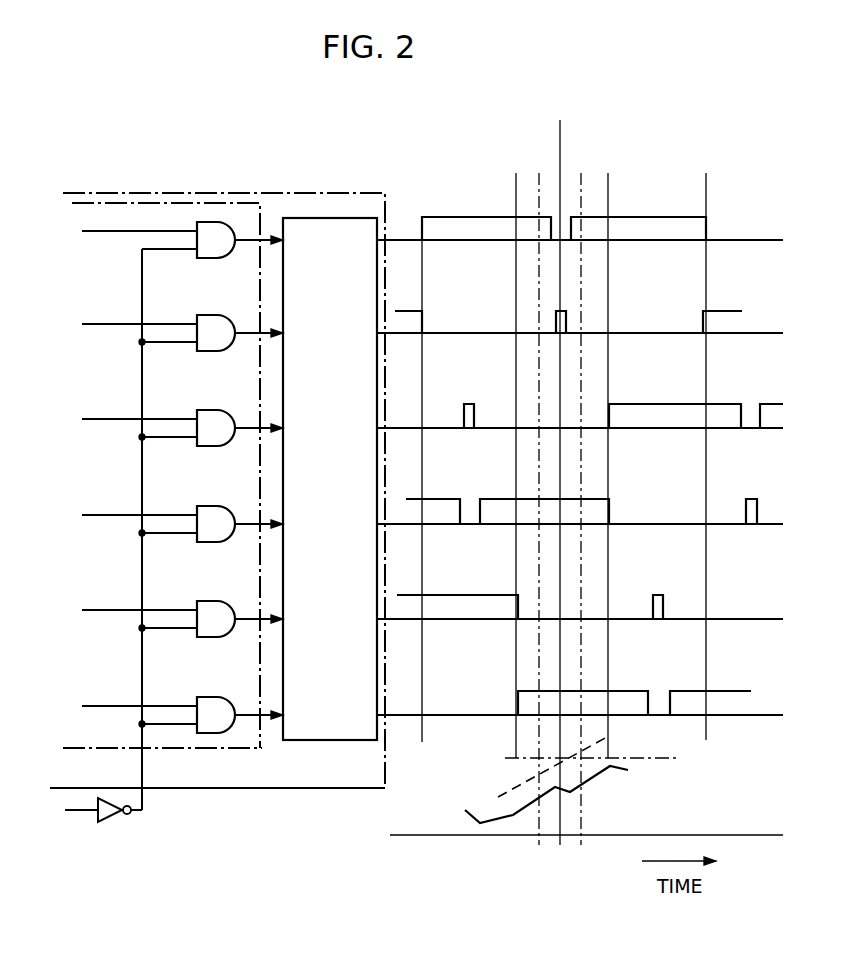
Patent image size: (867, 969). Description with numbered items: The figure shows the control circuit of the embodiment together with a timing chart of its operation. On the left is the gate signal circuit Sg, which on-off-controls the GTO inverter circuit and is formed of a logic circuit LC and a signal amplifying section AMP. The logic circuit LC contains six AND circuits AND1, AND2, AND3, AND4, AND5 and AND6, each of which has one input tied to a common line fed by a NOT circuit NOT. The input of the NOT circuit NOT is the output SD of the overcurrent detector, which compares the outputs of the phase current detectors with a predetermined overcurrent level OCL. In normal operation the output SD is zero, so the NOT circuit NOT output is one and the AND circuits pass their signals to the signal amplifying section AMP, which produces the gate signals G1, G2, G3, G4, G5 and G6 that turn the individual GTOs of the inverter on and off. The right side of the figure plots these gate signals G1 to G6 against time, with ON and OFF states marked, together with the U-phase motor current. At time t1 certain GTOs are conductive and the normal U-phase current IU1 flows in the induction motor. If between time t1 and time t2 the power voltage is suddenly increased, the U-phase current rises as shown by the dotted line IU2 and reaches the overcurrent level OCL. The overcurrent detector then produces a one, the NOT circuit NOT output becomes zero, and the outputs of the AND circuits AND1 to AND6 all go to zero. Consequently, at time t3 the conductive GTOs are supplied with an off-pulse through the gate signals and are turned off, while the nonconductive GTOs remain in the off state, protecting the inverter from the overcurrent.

The AND circuit AND1 is at (205, 259).
The AND circuit AND2 is at (205, 352).
The AND circuit AND3 is at (205, 447).
The AND circuit AND4 is at (205, 543).
The AND circuit AND5 is at (205, 638).
The AND circuit AND6 is at (228, 733).
The logic circuit LC is at (153, 750).
The signal amplifying section AMP is at (378, 781).
The gate signal circuit Sg is at (270, 790).
The NOT circuit NOT is at (130, 827).
The output of overcurrent detector SD is at (86, 811).
The gate signal G1 is at (372, 240).
The gate signal G2 is at (372, 333).
The gate signal G3 is at (372, 428).
The gate signal G4 is at (372, 524).
The gate signal G5 is at (372, 619).
The gate signal G6 is at (372, 715).
The time t1 is at (541, 496).
The time t2 is at (560, 482).
The time t3 is at (601, 496).
The overcurrent level OCL is at (615, 758).
The U-phase current in normal time IU1 is at (595, 780).
The increased U-phase current IU2 is at (521, 792).